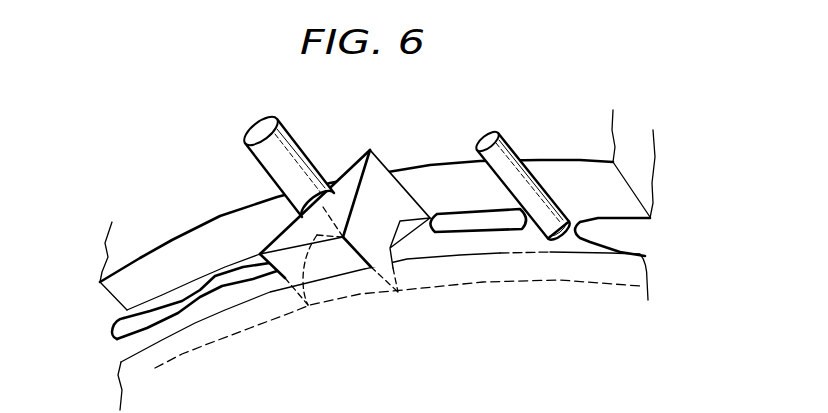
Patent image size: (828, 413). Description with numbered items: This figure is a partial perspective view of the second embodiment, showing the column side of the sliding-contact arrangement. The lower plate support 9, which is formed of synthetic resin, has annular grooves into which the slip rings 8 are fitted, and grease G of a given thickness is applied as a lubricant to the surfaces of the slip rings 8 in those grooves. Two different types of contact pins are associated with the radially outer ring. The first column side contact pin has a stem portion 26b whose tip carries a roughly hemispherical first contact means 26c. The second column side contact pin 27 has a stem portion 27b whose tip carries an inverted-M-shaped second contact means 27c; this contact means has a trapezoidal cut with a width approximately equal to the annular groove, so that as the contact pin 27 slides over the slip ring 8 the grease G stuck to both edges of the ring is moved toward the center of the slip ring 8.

The lower plate support 9 is at (187, 213).
The slip ring 8 is at (497, 243).
The second column side contact pin 27 is at (380, 165).
The stem portion 27b is at (288, 143).
The second contact means 27c is at (418, 200).
The stem portion 26b is at (552, 112).
The first contact means 26c is at (558, 238).
The grease G is at (120, 327).